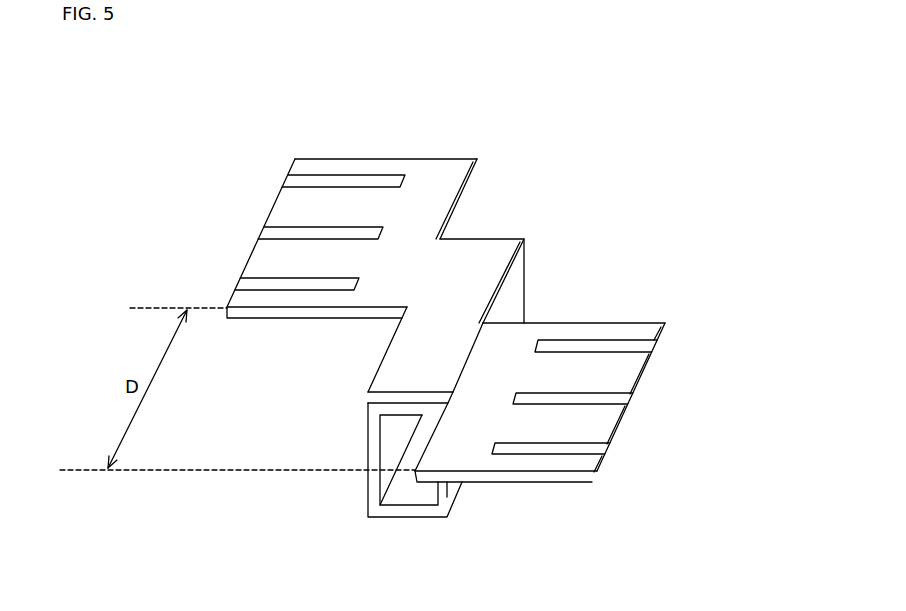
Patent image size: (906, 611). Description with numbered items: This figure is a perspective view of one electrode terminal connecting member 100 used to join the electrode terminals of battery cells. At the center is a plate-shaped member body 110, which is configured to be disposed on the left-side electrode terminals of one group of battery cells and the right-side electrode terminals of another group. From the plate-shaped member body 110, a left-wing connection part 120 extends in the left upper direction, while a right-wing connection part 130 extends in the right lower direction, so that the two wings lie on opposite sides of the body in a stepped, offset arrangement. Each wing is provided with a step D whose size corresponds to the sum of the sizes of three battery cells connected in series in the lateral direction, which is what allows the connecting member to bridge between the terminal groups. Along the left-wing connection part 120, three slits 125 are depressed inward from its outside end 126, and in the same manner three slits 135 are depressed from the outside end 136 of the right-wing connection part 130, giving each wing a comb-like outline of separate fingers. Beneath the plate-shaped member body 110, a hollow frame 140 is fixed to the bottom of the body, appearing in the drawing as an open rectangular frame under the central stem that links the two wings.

The electrode terminal connecting member 100 is at (165, 92).
The plate-shaped member body 110 is at (468, 265).
The left-wing connection part 120 is at (265, 266).
The slits 125 is at (293, 233).
The outside end 126 is at (290, 180).
The right-wing connection part 130 is at (602, 428).
The slits 135 is at (632, 347).
The outside end 136 is at (655, 356).
The hollow frame 140 is at (368, 463).